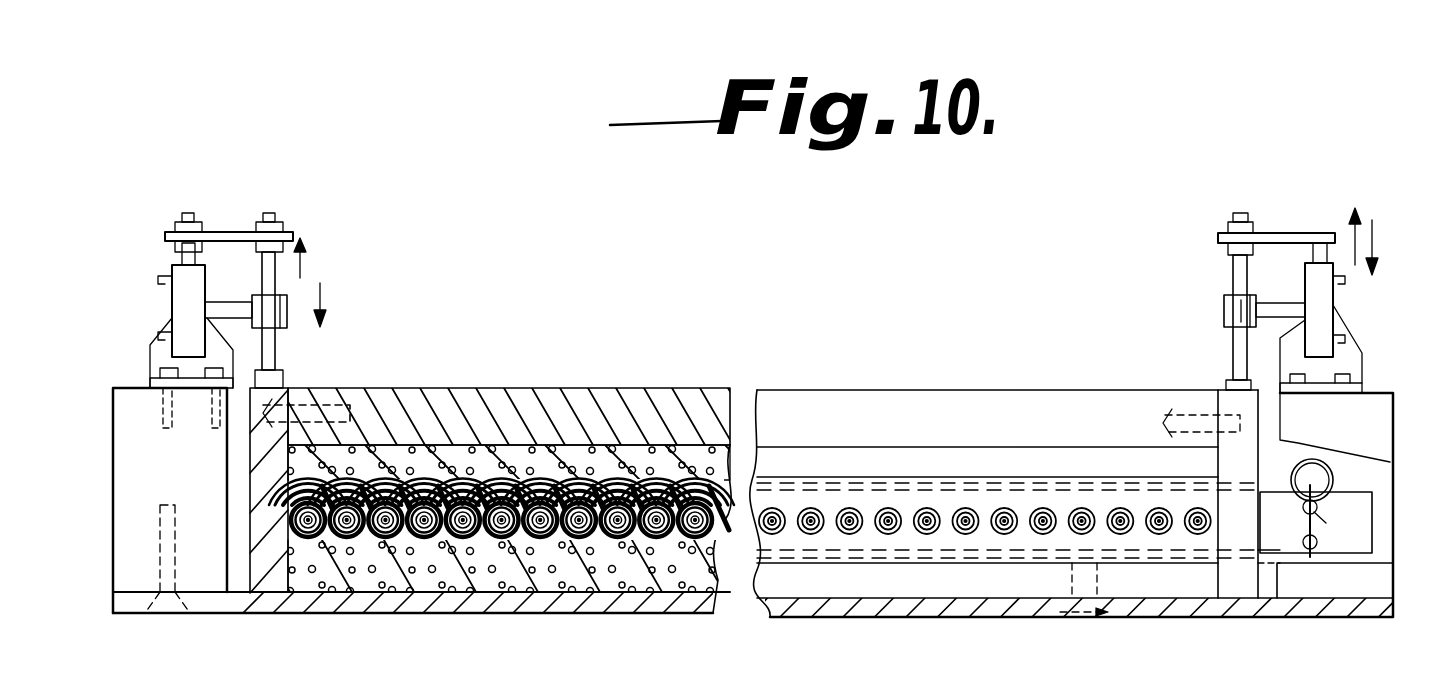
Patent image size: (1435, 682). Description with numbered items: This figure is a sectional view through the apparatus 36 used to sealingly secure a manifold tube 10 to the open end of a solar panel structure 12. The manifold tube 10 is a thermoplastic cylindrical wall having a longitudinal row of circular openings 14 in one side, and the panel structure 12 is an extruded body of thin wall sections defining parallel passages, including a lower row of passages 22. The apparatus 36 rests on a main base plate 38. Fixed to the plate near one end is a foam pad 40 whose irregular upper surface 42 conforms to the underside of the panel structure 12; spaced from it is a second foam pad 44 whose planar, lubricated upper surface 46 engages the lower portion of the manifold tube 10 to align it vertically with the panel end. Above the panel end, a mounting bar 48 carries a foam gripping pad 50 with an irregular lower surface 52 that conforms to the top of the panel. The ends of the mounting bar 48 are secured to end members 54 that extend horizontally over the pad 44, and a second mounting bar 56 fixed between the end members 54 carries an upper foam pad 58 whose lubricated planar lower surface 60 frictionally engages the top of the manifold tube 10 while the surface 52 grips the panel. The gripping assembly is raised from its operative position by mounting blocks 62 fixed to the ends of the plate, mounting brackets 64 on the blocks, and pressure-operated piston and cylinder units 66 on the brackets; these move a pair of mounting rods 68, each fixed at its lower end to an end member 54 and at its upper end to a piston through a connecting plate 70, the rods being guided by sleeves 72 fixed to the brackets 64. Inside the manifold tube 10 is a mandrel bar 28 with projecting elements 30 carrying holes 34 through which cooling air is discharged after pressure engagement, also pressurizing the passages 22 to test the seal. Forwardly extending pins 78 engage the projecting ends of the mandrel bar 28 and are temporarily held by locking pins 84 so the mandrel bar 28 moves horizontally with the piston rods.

The manifold tube 10 is at (1146, 432).
The solar panel structure 12 is at (278, 495).
The openings 14 is at (887, 533).
The lower row of passages 22 is at (385, 540).
The mandrel bar 28 is at (1347, 497).
The projecting elements 30 is at (660, 545).
The holes 34 is at (312, 545).
The apparatus 36 is at (1138, 202).
The main base plate 38 is at (1057, 609).
The pad 40 is at (548, 580).
The irregular configuration 42 is at (455, 545).
The second pad 44 is at (865, 590).
The upper surface 46 is at (820, 563).
The mounting bar 48 is at (538, 390).
The gripping pad 50 is at (648, 390).
The irregular lower surface 52 is at (465, 478).
The end members 54 is at (280, 392).
The second mounting bar 56 is at (937, 381).
The upper foam pad 58 is at (1005, 455).
The lubricated lower surface 60 is at (840, 480).
The mounting blocks 62 is at (125, 437).
The mounting brackets 64 is at (152, 354).
The piston and cylinder units 66 is at (182, 303).
The mounting rods 68 is at (270, 278).
The connecting plate 70 is at (223, 232).
The sleeves 72 is at (290, 310).
The pins 78 is at (1318, 525).
The locking pins 84 is at (1312, 458).